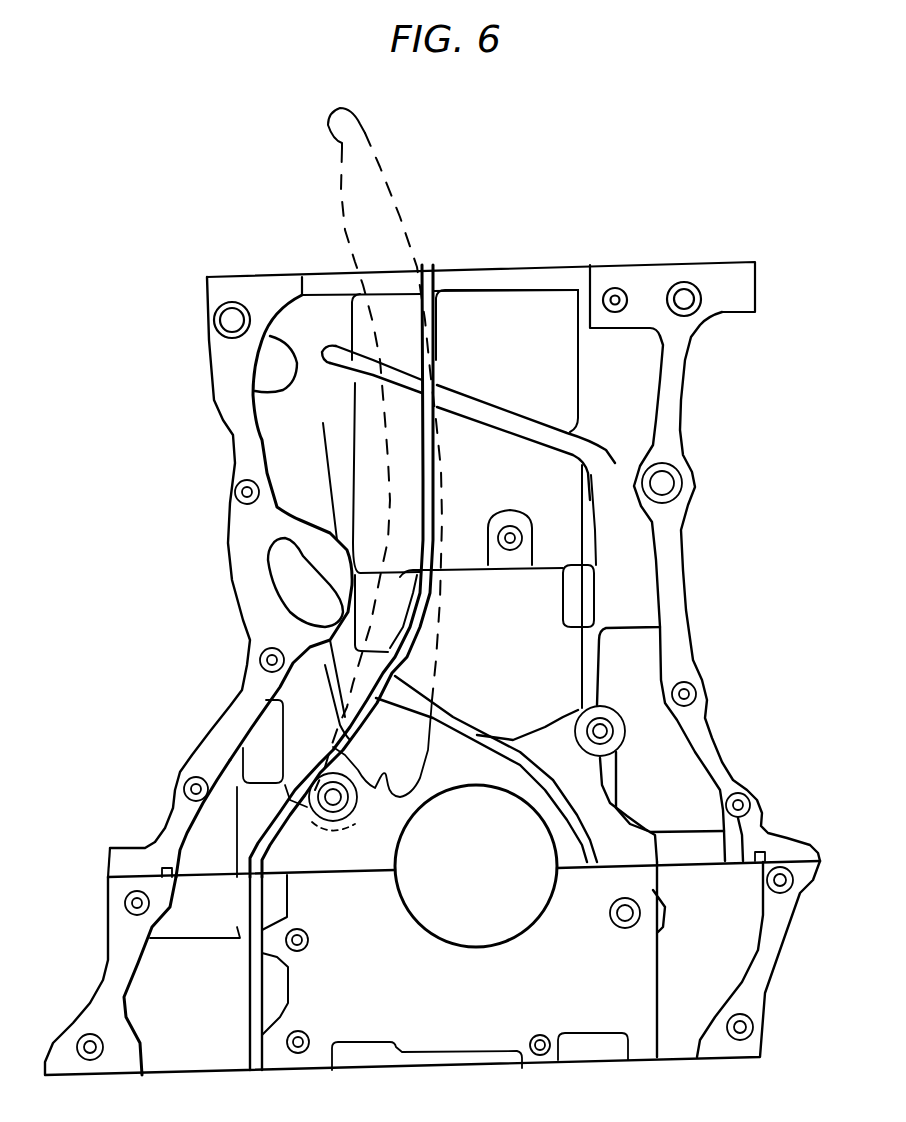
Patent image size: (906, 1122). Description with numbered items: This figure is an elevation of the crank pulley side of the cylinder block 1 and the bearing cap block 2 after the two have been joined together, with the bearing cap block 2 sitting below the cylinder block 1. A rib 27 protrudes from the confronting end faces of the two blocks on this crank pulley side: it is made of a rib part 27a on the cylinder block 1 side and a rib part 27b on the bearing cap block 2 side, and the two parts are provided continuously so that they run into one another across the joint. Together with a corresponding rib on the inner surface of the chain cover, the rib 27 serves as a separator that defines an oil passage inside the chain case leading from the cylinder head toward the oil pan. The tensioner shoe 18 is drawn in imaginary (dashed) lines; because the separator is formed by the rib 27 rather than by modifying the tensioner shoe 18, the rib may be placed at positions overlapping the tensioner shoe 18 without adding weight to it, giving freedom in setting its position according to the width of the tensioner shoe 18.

The cylinder block 1 is at (682, 626).
The bearing cap block 2 is at (762, 978).
The tensioner shoe 18 is at (400, 205).
The rib 27 is at (402, 928).
The rib part 27a is at (372, 878).
The rib part 27b is at (258, 1020).